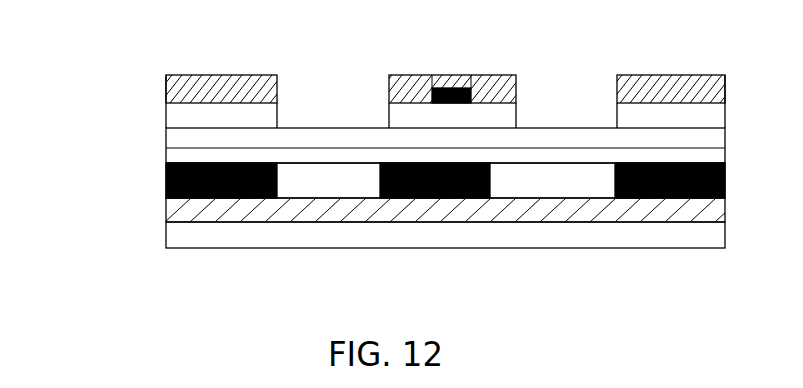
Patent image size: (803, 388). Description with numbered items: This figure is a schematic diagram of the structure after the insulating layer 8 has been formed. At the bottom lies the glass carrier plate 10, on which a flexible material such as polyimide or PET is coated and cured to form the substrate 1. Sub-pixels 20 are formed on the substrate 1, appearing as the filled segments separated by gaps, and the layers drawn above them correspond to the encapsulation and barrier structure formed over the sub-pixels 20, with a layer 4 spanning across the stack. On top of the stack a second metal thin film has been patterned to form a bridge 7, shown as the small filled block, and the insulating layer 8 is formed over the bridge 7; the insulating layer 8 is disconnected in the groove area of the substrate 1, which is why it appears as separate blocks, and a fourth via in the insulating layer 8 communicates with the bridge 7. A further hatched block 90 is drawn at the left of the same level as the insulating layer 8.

The light shielding layer 90 is at (216, 92).
The planarization layer 4 is at (334, 112).
The insulating layer 8 is at (412, 75).
The bridge 7 is at (450, 88).
The sub-pixels 20 is at (166, 182).
The substrate 1 is at (166, 210).
The glass carrier plate 10 is at (166, 240).